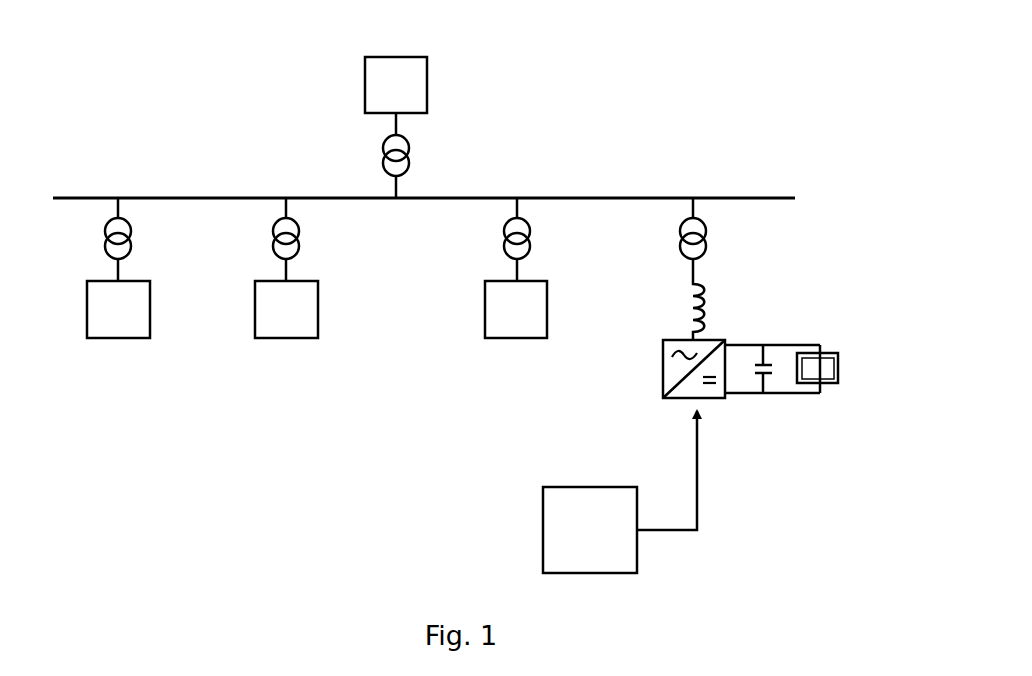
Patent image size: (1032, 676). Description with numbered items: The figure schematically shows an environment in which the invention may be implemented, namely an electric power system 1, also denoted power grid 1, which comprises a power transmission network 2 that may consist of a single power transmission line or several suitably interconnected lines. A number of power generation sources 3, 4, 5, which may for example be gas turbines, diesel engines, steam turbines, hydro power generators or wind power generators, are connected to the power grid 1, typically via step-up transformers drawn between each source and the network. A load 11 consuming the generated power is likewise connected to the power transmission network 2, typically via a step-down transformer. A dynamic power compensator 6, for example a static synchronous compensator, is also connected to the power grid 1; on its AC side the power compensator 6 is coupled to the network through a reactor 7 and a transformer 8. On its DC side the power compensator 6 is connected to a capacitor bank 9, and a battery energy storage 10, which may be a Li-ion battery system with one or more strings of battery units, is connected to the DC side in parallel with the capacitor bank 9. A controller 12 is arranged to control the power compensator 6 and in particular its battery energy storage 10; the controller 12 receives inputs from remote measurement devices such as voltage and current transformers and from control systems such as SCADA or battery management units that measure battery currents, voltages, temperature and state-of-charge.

The electric power system 1 is at (681, 62).
The power transmission network 2 is at (187, 197).
The power generation source 3 is at (94, 320).
The power generation source 4 is at (262, 320).
The power generation source 5 is at (493, 322).
The dynamic power compensator 6 is at (796, 312).
The reactor 7 is at (712, 300).
The transformer 8 is at (712, 238).
The capacitor bank 9 is at (772, 370).
The battery energy storage 10 is at (838, 373).
The load 11 is at (418, 91).
The controller 12 is at (623, 555).